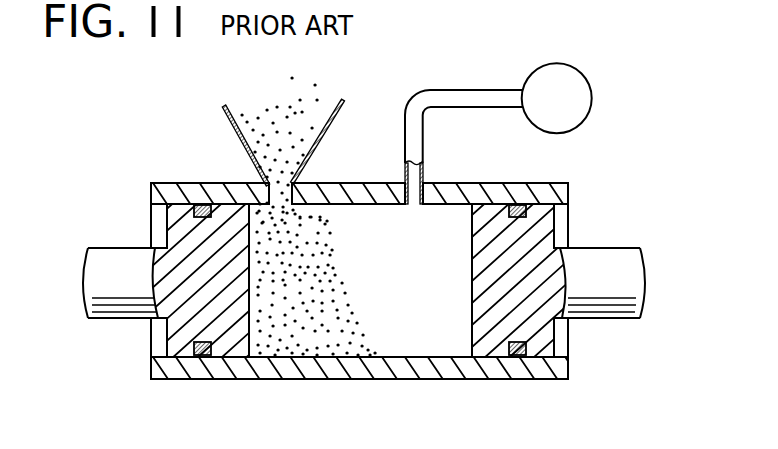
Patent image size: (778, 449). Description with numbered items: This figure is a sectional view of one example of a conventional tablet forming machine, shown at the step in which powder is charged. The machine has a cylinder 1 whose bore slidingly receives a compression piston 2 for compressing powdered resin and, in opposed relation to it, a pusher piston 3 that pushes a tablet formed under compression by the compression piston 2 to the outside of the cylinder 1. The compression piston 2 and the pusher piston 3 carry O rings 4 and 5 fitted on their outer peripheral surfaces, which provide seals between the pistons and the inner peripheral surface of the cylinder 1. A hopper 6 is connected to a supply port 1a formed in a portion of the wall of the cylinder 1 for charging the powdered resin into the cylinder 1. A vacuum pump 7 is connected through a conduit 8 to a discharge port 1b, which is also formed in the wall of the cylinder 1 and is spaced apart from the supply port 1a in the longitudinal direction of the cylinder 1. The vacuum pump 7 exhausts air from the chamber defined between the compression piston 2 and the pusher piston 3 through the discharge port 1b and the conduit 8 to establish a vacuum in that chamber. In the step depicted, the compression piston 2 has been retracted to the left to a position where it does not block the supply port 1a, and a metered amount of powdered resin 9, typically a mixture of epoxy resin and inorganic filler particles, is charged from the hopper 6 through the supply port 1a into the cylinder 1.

The cylinder 1 is at (338, 366).
The supply port 1a is at (272, 186).
The discharge port 1b is at (421, 186).
The compression piston 2 is at (185, 236).
The pusher piston 3 is at (542, 232).
The O ring 4 is at (204, 360).
The O ring 5 is at (521, 360).
The hopper 6 is at (330, 128).
The vacuum pump 7 is at (584, 102).
The conduit 8 is at (492, 104).
The powdered resin 9 is at (283, 126).